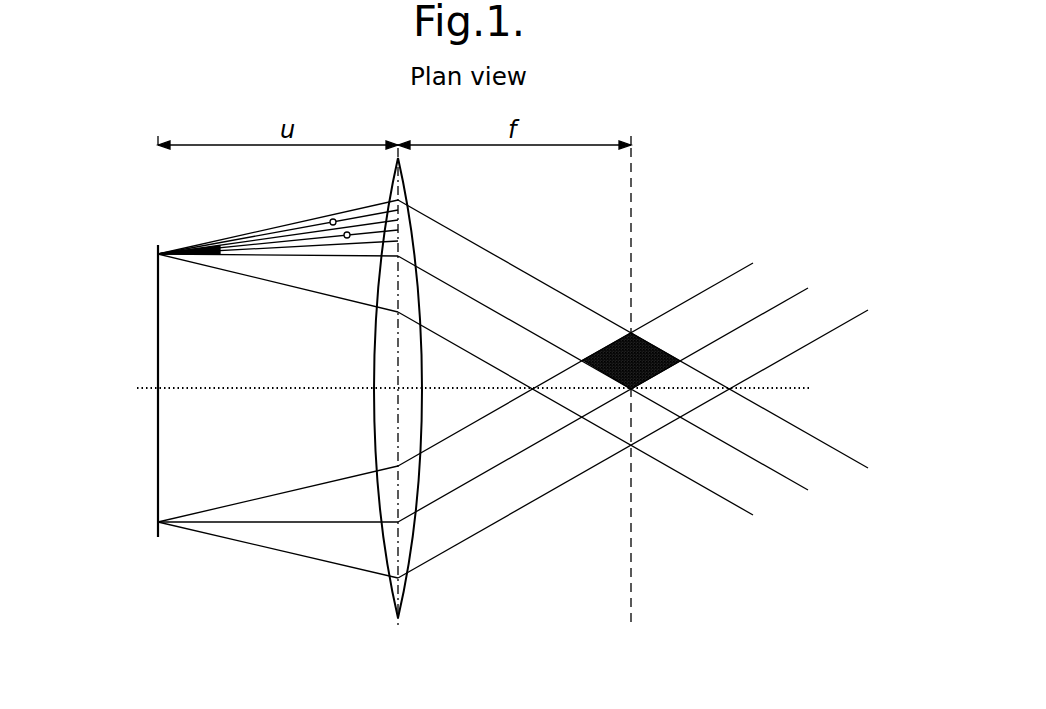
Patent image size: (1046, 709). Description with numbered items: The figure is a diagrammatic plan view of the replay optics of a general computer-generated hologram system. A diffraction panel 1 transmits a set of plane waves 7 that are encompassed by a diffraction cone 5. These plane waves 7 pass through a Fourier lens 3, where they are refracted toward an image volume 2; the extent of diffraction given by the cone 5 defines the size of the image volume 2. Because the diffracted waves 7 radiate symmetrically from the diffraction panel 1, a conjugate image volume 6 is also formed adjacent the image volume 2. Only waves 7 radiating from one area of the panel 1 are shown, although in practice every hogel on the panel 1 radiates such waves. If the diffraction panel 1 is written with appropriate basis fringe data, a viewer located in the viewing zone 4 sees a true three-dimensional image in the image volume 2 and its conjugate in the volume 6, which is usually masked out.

The diffraction panel 1 is at (142, 491).
The image volume 2 is at (643, 350).
The Fourier lens 3 is at (407, 602).
The viewing zone 4 is at (793, 387).
The diffraction cone 5 is at (278, 212).
The conjugate image volume 6 is at (652, 422).
The plane waves 7 is at (347, 232).